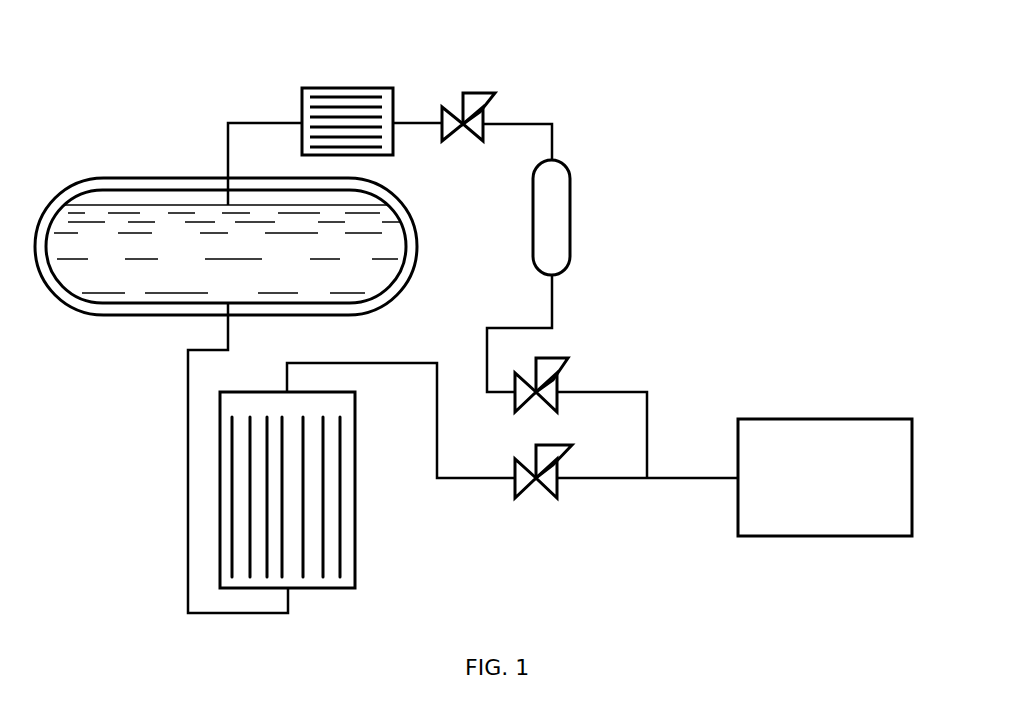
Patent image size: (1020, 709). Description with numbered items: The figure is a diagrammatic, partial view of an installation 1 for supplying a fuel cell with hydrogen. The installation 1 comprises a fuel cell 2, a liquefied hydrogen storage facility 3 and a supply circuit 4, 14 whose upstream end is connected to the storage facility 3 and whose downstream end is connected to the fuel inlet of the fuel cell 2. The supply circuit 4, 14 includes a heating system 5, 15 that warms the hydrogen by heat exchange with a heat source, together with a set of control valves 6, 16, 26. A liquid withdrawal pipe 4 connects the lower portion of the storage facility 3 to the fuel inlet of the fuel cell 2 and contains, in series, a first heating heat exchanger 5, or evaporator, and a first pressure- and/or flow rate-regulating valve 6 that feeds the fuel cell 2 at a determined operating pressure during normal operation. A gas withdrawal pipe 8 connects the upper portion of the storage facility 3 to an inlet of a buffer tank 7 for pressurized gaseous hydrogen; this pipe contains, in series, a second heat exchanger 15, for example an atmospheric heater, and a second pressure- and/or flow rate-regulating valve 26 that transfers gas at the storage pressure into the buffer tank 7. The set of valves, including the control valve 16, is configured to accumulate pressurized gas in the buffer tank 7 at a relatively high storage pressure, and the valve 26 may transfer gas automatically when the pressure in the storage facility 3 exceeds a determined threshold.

The installation 1 is at (816, 141).
The fuel cell 2 is at (838, 506).
The liquefied hydrogen storage facility 3 is at (193, 252).
The liquid withdrawal pipe 4 is at (613, 479).
The first heating heat exchanger 5 is at (228, 507).
The first pressure- and/or flow rate-regulating valve 6 is at (539, 501).
The buffer tank 7 is at (546, 216).
The gas withdrawal pipe 8 is at (220, 148).
The supply circuit 14 is at (593, 392).
The second heat exchanger 15 is at (302, 97).
The control valve 16 is at (578, 349).
The second pressure- and/or flow rate-regulating valve 26 is at (499, 107).